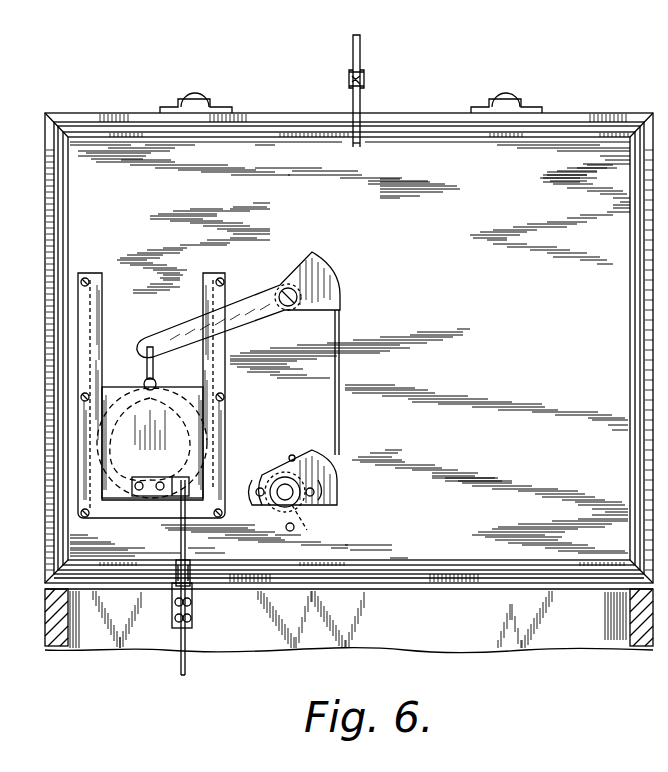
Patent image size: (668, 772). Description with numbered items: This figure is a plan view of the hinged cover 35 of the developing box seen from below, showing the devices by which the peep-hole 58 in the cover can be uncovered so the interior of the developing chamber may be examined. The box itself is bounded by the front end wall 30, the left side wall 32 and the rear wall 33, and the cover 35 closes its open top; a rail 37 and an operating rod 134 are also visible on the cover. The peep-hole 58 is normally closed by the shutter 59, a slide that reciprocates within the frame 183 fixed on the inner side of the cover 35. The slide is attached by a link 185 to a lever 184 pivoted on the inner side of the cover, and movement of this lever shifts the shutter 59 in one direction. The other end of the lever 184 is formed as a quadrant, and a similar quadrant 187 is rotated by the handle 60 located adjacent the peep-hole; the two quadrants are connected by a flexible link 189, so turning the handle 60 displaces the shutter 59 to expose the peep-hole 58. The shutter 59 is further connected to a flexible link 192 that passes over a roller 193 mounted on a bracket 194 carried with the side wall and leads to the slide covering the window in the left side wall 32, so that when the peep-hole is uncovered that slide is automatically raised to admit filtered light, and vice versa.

The front end wall 30 is at (614, 647).
The left side wall 32 is at (403, 645).
The rear wall 33 is at (45, 626).
The hinged cover 35 is at (408, 158).
The bottom frame rail 37 is at (410, 576).
The peep-hole 58 is at (202, 436).
The shutter 59 is at (112, 399).
The handle 60 is at (307, 531).
The operating rod 134 is at (361, 48).
The frame 183 is at (208, 301).
The lever 184 is at (245, 302).
The link 185 is at (155, 369).
The quadrant 187 is at (340, 495).
The flexible link 189 is at (341, 418).
The flexible link 192 is at (186, 651).
The roller 193 is at (191, 568).
The bracket 194 is at (194, 595).